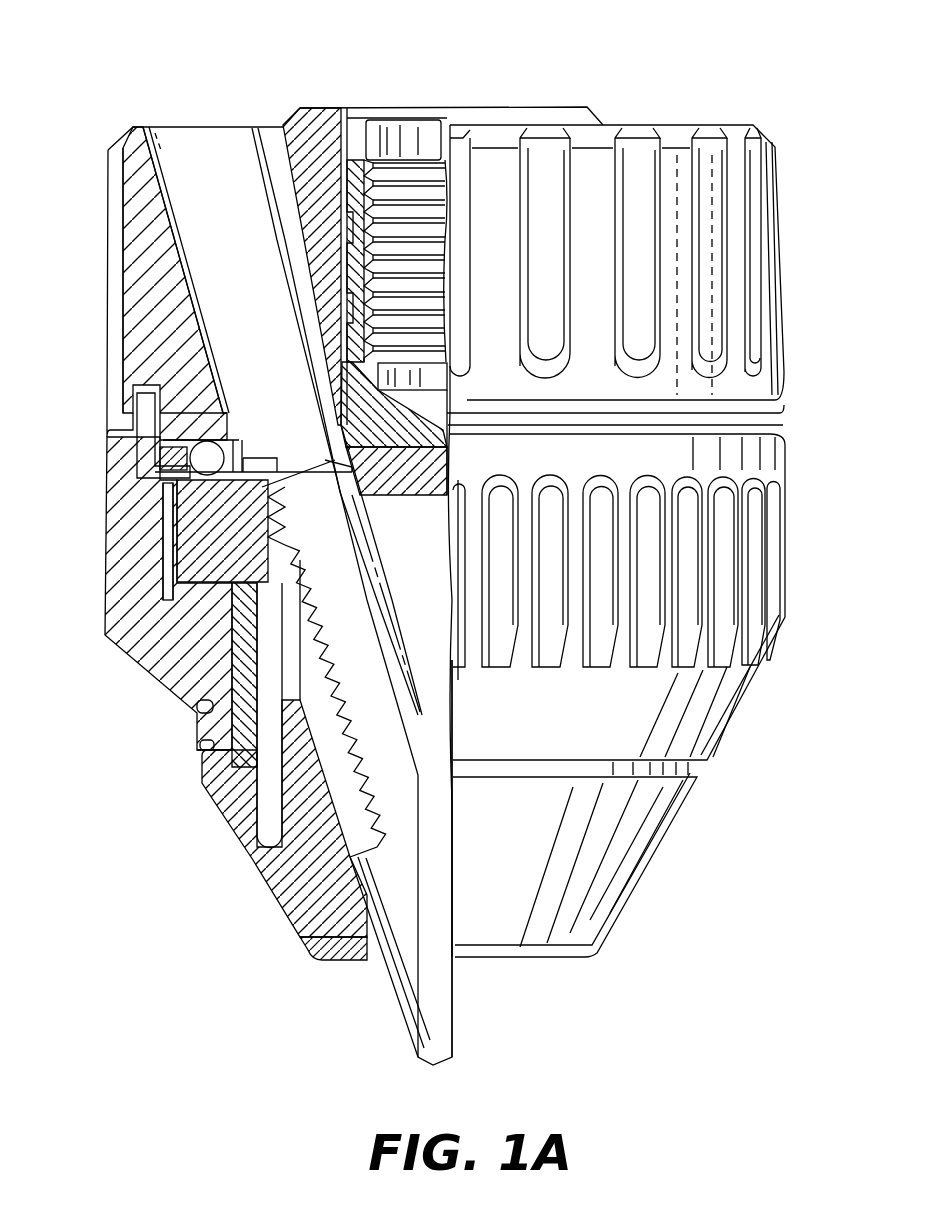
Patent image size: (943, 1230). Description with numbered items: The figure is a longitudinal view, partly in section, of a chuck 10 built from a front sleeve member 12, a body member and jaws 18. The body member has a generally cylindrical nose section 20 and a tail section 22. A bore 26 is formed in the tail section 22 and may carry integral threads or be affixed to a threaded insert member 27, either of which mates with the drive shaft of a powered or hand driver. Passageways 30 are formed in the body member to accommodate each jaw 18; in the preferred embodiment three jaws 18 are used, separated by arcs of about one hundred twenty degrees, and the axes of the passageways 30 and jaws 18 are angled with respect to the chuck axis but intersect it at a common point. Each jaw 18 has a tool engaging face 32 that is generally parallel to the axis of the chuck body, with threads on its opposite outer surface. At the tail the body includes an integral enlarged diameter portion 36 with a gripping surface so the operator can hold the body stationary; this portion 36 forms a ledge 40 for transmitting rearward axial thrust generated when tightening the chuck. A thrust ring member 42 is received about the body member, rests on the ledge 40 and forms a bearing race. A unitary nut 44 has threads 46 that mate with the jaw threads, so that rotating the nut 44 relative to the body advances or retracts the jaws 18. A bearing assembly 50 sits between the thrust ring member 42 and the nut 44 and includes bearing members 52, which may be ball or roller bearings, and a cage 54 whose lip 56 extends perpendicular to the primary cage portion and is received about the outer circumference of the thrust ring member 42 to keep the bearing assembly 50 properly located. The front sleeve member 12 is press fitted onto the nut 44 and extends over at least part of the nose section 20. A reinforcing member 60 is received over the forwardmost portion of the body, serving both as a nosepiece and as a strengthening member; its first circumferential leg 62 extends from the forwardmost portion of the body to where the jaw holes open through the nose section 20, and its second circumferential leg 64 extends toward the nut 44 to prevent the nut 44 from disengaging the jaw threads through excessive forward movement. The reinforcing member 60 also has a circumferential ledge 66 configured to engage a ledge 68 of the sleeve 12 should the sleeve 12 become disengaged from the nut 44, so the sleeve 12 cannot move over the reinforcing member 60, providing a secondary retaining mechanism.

The chuck 10 is at (690, 78).
The front sleeve member 12 is at (130, 632).
The jaws 18 is at (380, 975).
The nose section 20 is at (310, 905).
The tail section 22 is at (305, 128).
The bore 26 is at (388, 128).
The threaded insert member 27 is at (422, 132).
The passageways 30 is at (335, 790).
The tool engaging face 32 is at (455, 992).
The enlarged diameter portion 36 is at (130, 218).
The ledge 40 is at (175, 390).
The thrust ring member 42 is at (140, 410).
The nut 44 is at (185, 545).
The threads 46 is at (290, 490).
The bearing assembly 50 is at (150, 472).
The bearing members 52 is at (172, 493).
The cage 54 is at (152, 458).
The lip 56 is at (140, 395).
The reinforcing member 60 is at (305, 938).
The first circumferential leg 62 is at (335, 790).
The second circumferential leg 64 is at (230, 692).
The ledge 66 is at (200, 750).
The ledge 68 is at (200, 712).